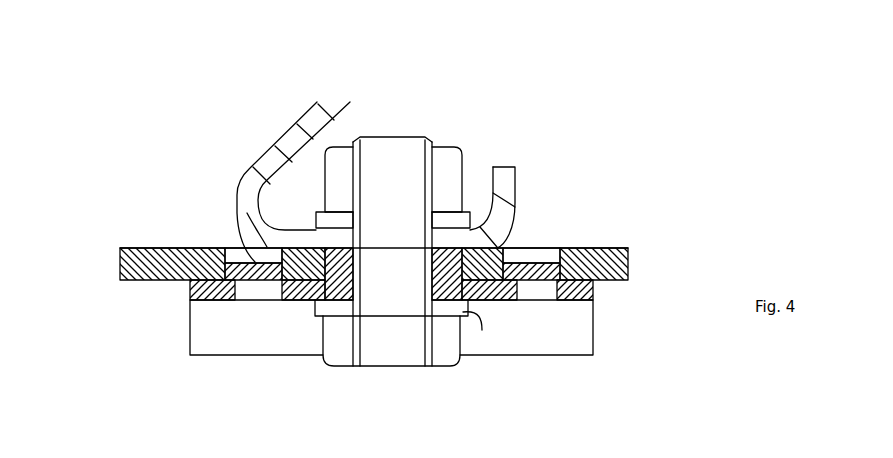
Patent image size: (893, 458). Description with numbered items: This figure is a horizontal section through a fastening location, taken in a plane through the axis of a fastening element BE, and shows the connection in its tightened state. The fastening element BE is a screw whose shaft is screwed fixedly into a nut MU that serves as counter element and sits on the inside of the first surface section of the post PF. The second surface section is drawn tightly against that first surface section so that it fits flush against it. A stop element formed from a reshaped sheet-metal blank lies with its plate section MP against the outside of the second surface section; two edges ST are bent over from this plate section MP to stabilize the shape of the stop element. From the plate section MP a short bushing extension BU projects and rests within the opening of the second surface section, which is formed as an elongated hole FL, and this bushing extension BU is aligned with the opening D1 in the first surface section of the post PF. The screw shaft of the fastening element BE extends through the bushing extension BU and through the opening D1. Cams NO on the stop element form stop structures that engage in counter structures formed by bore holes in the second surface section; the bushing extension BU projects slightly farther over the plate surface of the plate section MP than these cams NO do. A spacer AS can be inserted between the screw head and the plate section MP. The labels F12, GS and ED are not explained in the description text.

The post PF is at (278, 90).
The fold of the strap F12 is at (312, 234).
The cams NO is at (231, 246).
The housing plate GS is at (230, 248).
The bushing extension BU is at (330, 212).
The nut MU is at (448, 167).
The opening D1 is at (507, 230).
The cover element ED is at (243, 290).
The plate section MP is at (307, 290).
The elongated hole FL is at (430, 277).
The spacer AS is at (482, 330).
The fastening element BE is at (405, 352).
The edges ST is at (573, 338).